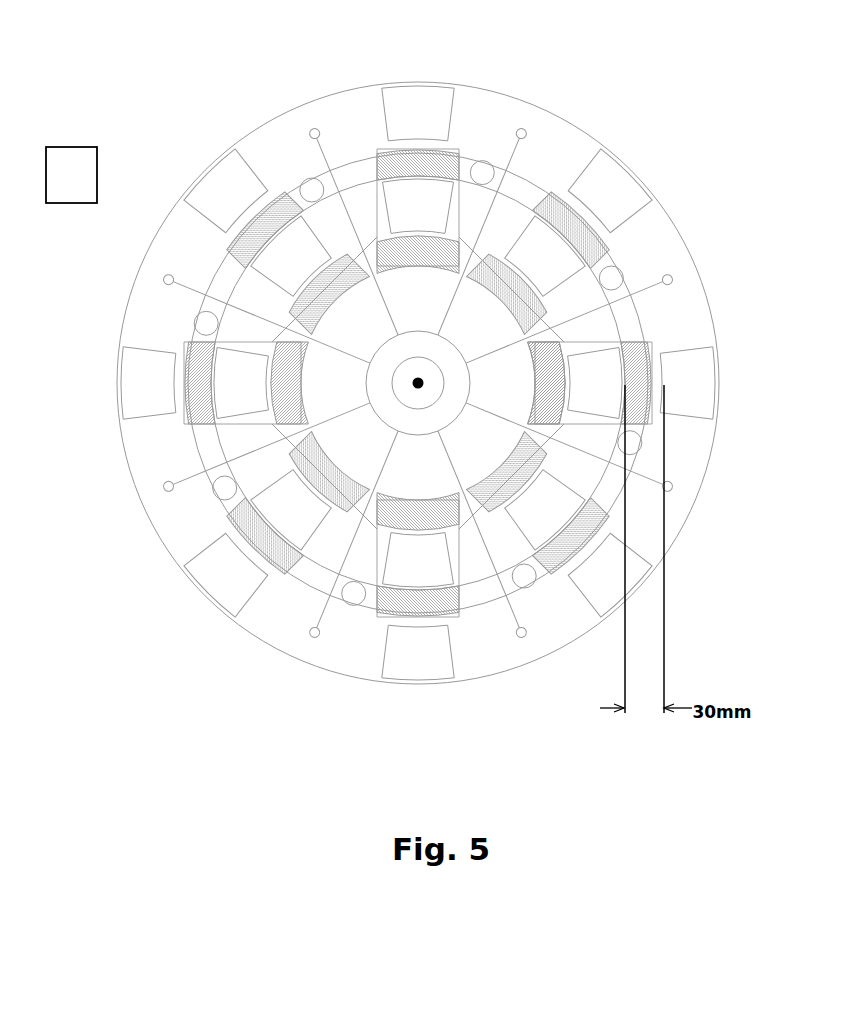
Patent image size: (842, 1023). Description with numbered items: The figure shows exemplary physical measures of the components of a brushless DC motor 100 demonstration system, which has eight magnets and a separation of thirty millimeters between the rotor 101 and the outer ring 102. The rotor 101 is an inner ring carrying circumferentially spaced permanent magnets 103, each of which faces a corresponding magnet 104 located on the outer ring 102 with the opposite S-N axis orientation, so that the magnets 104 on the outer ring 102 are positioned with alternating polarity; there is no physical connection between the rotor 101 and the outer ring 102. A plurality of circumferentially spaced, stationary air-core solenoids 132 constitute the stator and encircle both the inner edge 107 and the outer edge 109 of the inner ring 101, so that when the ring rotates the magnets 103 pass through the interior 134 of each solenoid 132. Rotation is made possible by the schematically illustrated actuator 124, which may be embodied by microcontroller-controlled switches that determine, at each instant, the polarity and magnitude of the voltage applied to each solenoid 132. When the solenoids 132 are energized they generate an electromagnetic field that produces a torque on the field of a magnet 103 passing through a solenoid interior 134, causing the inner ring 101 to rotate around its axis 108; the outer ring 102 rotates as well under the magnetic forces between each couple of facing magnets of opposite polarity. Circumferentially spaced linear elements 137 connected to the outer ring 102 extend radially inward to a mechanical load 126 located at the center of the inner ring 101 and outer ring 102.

The Brushless DC Motor 100 is at (215, 110).
The rotor 101 is at (487, 245).
The outer ring 102 is at (553, 141).
The magnet 103 is at (445, 190).
The magnet 104 is at (418, 108).
The inner edge 107 is at (557, 434).
The axis 108 is at (416, 381).
The outer edge 109 is at (367, 178).
The actuator 124 is at (79, 153).
The load 126 is at (418, 386).
The air-core solenoid 132 is at (395, 600).
The solenoid interior 134 is at (569, 352).
The linear element 137 is at (510, 607).